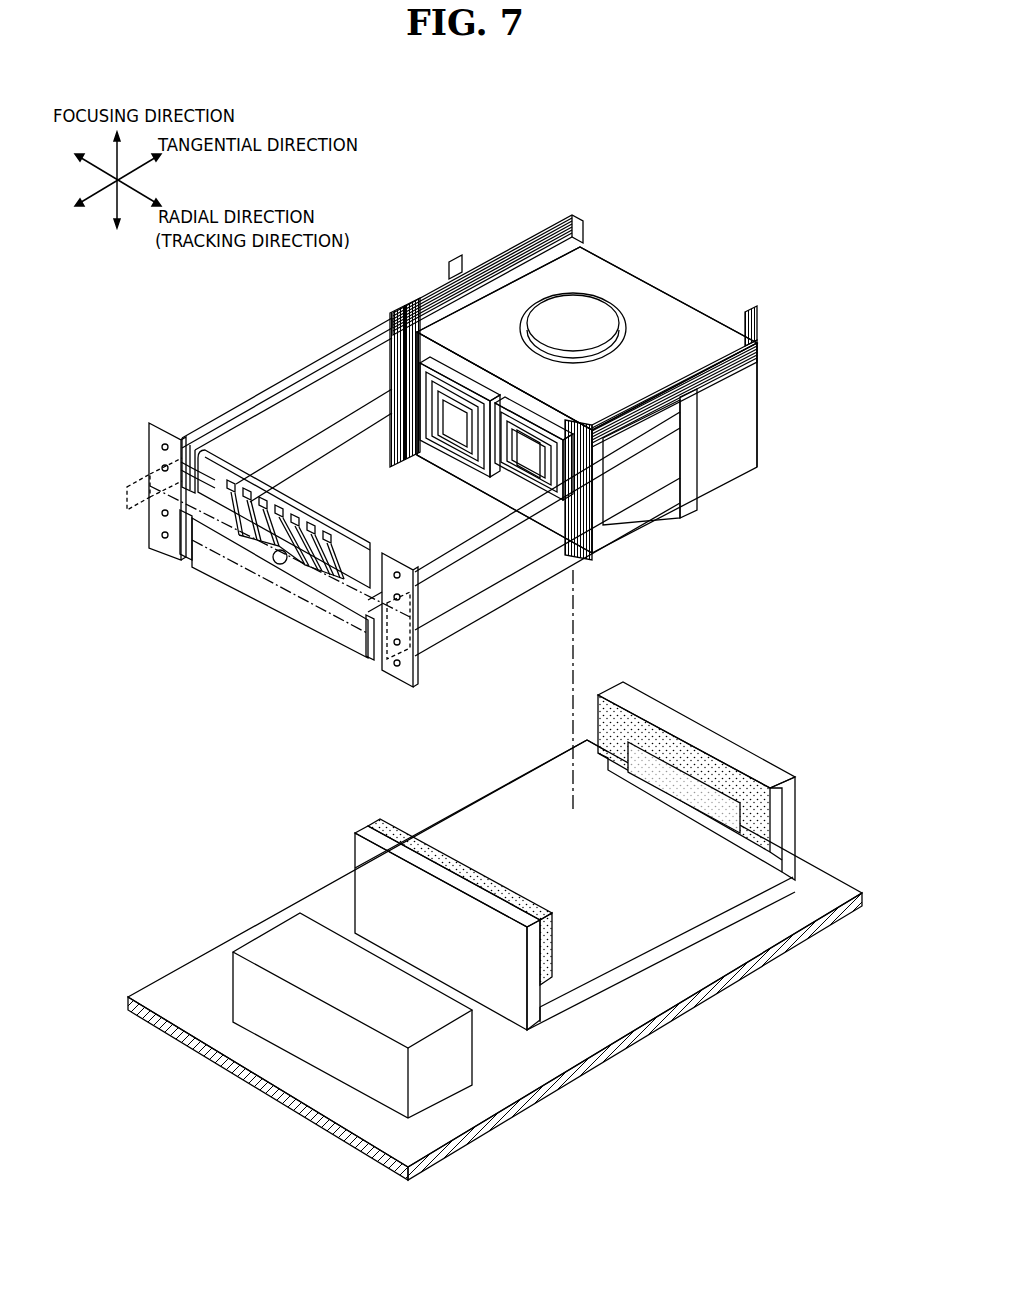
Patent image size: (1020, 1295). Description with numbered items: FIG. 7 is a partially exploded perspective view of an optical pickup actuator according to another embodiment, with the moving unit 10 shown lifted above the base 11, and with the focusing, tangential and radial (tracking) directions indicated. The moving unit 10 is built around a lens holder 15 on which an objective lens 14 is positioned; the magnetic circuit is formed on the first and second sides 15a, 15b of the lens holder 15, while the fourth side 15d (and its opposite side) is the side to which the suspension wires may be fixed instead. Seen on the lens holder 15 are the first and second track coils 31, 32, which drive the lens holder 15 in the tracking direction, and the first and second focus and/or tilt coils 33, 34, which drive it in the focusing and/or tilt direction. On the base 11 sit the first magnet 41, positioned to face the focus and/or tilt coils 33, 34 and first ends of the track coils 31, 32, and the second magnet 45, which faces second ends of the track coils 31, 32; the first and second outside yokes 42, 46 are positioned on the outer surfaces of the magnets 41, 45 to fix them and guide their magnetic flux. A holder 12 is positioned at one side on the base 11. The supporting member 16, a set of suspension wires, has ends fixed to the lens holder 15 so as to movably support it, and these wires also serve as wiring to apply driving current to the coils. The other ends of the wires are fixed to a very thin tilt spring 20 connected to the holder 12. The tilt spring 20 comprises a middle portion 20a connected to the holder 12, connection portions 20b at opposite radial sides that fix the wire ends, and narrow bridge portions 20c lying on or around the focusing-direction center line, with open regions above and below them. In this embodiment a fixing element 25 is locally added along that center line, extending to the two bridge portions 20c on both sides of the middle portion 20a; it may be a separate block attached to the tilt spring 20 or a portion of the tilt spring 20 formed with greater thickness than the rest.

The moving unit 10 is at (672, 230).
The base 11 is at (638, 1017).
The holder 12 is at (300, 1030).
The objective lens 14 is at (603, 315).
The lens holder 15 is at (674, 311).
The first side of lens holder 15a is at (393, 448).
The second side of lens holder 15b is at (603, 251).
The fourth side of lens holder 15d is at (509, 241).
The supporting member 16 is at (258, 410).
The tilt spring 20 is at (260, 610).
The middle portion 20a is at (232, 578).
The connection portions 20b is at (152, 501).
The bridge portions 20c is at (190, 534).
The fixing element 25 is at (320, 610).
The first track coil 31 is at (425, 292).
The second track coil 32 is at (752, 310).
The first focus and/or tilt coil 33 is at (438, 448).
The second focus and/or tilt coil 34 is at (492, 480).
The first magnet 41 is at (491, 901).
The first outside yoke 42 is at (420, 862).
The second magnet 45 is at (680, 733).
The second outside yoke 46 is at (753, 761).